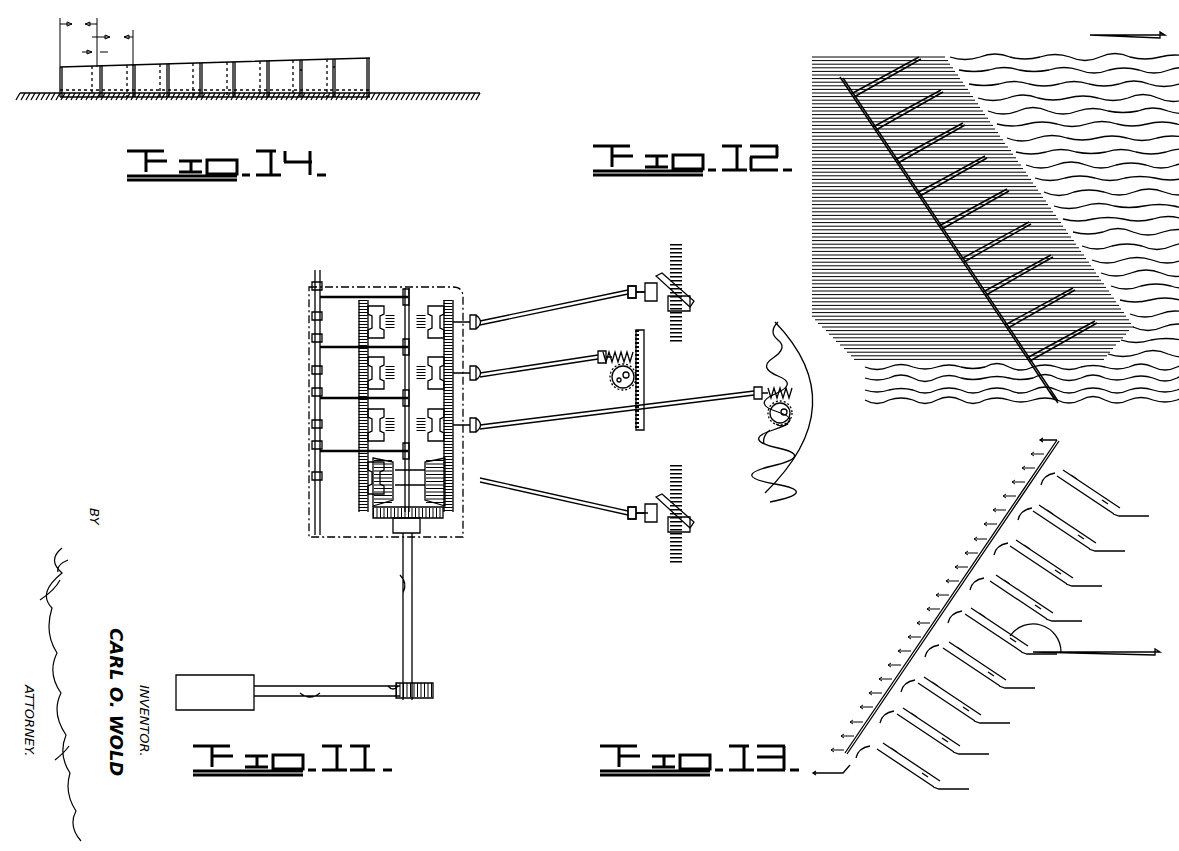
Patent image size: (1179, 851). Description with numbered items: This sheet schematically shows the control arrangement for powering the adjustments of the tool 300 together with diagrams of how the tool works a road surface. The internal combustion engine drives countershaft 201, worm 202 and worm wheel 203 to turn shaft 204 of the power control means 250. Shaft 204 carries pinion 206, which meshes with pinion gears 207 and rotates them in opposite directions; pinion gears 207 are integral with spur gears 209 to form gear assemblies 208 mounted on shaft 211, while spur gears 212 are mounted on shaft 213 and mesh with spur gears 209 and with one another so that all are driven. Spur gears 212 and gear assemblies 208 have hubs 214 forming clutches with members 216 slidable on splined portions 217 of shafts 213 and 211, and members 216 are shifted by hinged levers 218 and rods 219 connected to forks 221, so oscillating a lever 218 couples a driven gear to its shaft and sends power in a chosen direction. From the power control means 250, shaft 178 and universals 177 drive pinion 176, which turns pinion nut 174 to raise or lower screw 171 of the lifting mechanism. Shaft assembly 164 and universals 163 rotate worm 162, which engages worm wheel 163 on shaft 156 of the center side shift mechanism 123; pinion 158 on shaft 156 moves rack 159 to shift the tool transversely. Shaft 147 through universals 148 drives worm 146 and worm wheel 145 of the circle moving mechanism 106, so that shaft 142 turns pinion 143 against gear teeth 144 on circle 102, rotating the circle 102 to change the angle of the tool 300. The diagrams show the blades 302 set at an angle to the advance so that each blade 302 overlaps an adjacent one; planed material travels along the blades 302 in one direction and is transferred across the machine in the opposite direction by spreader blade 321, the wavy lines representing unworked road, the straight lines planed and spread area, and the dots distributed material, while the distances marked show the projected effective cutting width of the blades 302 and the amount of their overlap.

In FIG. 14, the tool 300 is at (68, 131).
In FIG. 12, the tool 300 is at (848, 92).
In FIG. 14, the blades 302 is at (372, 58).
In FIG. 12, the blades 302 is at (957, 90).
In FIG. 13, the blades 302 is at (913, 776).
In FIG. 12, the spreader blade 321 is at (1052, 397).
In FIG. 13, the spreader blade 321 is at (1000, 515).
In FIG. 11, the power control means 250 is at (478, 298).
In FIG. 11, the hinged levers 218 is at (318, 283).
In FIG. 11, the rods 219 is at (332, 288).
In FIG. 11, the spur gears 212 is at (470, 290).
In FIG. 11, the forks 221 is at (407, 297).
In FIG. 11, the hubs 214 is at (367, 312).
In FIG. 11, the splined portions 217 is at (450, 298).
In FIG. 11, the shaft 213 is at (366, 342).
In FIG. 11, the members 216 is at (434, 315).
In FIG. 11, the shaft 211 is at (370, 480).
In FIG. 11, the spur gears 209 is at (376, 517).
In FIG. 11, the pinion gears 207 is at (400, 515).
In FIG. 11, the gear assemblies 208 is at (372, 508).
In FIG. 11, the pinion 206 is at (426, 534).
In FIG. 11, the shaft 204 is at (415, 566).
In FIG. 11, the countershaft 201 is at (290, 685).
In FIG. 11, the worm 202 is at (400, 688).
In FIG. 11, the worm wheel 203 is at (436, 688).
In FIG. 11, the shaft 178 is at (575, 300).
In FIG. 11, the shaft assembly 164 is at (540, 366).
In FIG. 11, the rack 159 is at (648, 410).
In FIG. 11, the universals 177 is at (630, 288).
In FIG. 11, the pinion 176 is at (648, 282).
In FIG. 11, the screw 171 is at (683, 280).
In FIG. 11, the pinion nut 174 is at (690, 305).
In FIG. 11, the worm 162 is at (620, 350).
In FIG. 11, the worm wheel 163 is at (598, 355).
In FIG. 11, the pinion 158 is at (646, 393).
In FIG. 11, the shaft 156 is at (612, 415).
In FIG. 11, the shaft 147 is at (588, 430).
In FIG. 11, the center side shift mechanism 123 is at (610, 378).
In FIG. 11, the universals 148 is at (480, 427).
In FIG. 11, the gear teeth 144 is at (770, 387).
In FIG. 11, the worm 146 is at (770, 408).
In FIG. 11, the shaft 142 is at (790, 410).
In FIG. 11, the pinion 143 is at (792, 416).
In FIG. 11, the worm wheel 145 is at (790, 425).
In FIG. 11, the circle moving mechanism 106 is at (766, 430).
In FIG. 11, the circle 102 is at (786, 474).